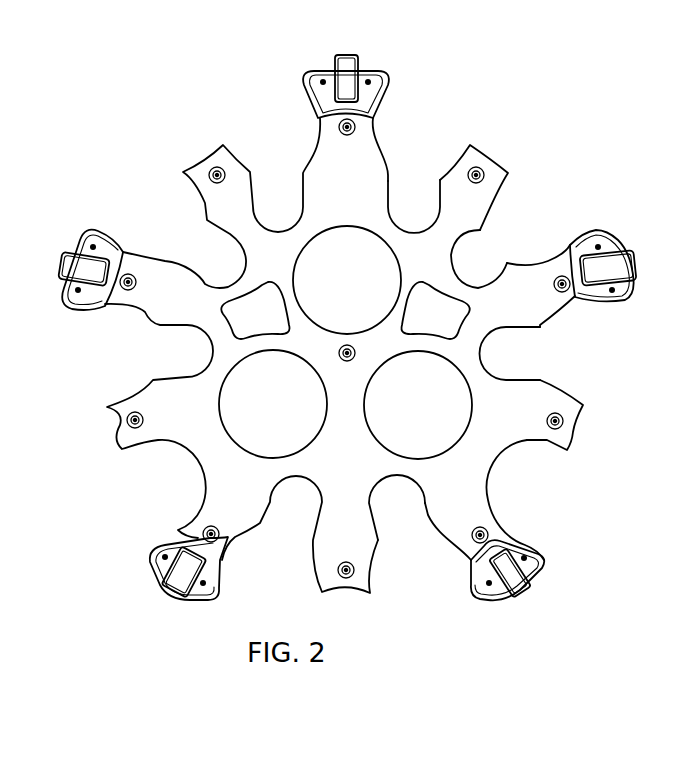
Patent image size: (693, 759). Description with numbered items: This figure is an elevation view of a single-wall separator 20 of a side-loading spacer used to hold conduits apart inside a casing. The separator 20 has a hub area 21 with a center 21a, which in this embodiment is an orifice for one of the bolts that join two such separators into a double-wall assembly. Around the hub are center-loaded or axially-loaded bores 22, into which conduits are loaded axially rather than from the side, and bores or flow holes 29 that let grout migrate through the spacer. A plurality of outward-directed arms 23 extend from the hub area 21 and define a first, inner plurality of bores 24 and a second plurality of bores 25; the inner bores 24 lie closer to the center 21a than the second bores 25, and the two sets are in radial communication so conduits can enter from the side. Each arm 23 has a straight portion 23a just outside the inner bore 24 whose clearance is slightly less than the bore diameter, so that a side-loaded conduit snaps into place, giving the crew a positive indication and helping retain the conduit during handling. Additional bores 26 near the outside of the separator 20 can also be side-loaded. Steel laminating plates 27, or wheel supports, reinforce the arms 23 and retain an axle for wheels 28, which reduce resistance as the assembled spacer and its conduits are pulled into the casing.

The separator 20 is at (505, 106).
The hub area 21 is at (383, 352).
The center 21a is at (350, 346).
The center-loaded bore 22 is at (289, 416).
The arm 23 is at (513, 263).
The straight portion 23a is at (441, 183).
The inner bore 24 is at (527, 357).
The second plurality of bores 25 is at (592, 372).
The additional bore 26 is at (530, 493).
The laminating plate 27 is at (540, 568).
The wheel 28 is at (519, 600).
The flow hole 29 is at (272, 326).